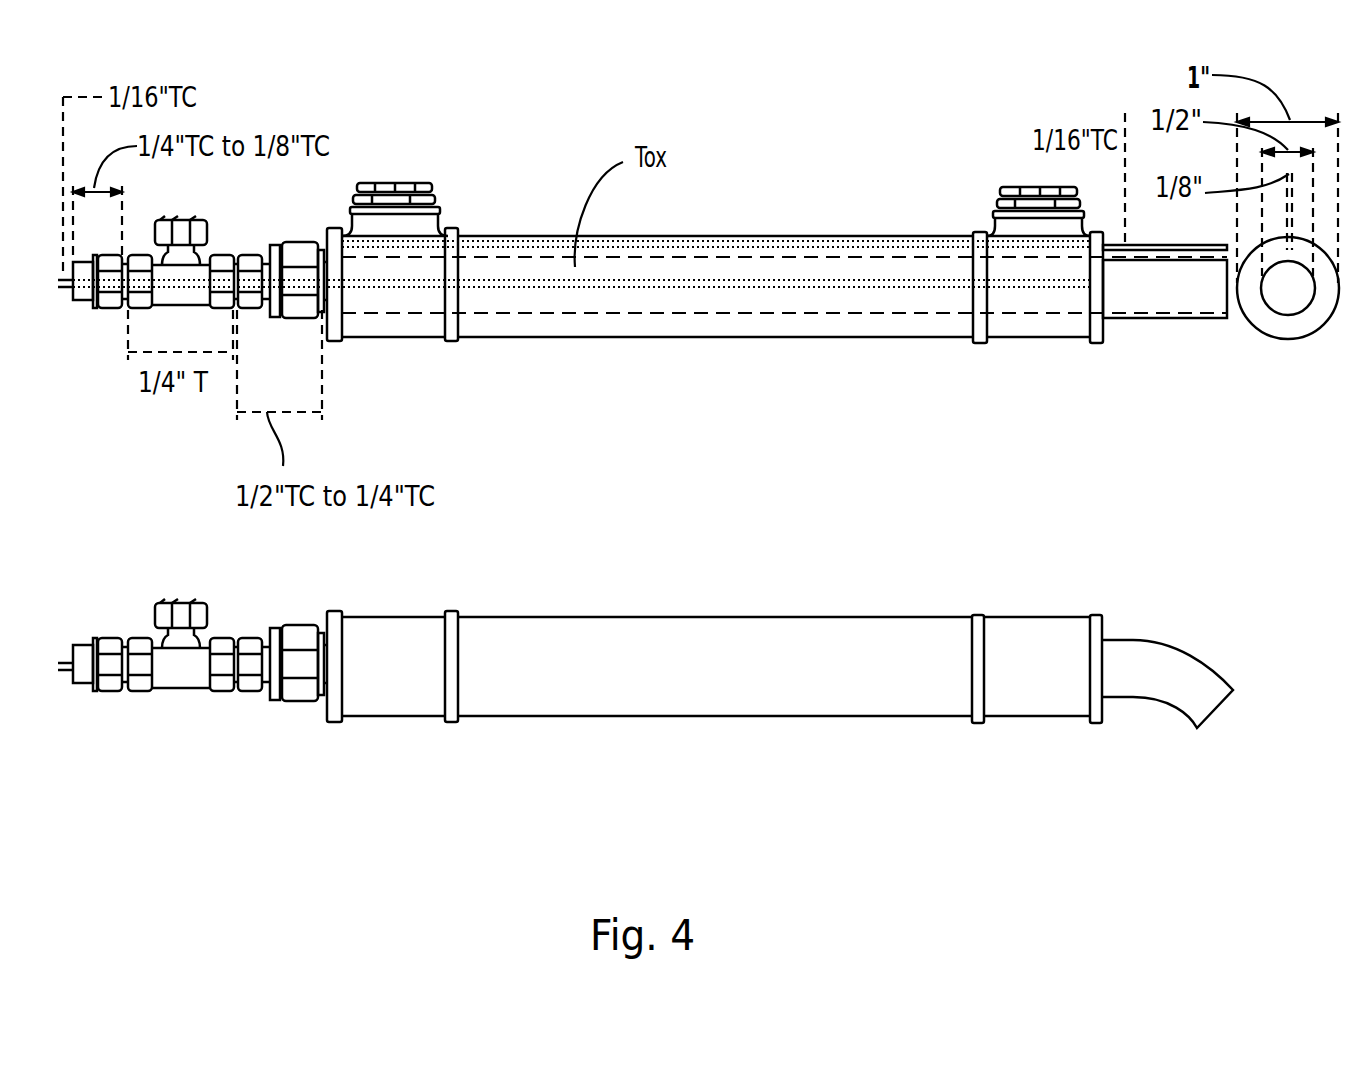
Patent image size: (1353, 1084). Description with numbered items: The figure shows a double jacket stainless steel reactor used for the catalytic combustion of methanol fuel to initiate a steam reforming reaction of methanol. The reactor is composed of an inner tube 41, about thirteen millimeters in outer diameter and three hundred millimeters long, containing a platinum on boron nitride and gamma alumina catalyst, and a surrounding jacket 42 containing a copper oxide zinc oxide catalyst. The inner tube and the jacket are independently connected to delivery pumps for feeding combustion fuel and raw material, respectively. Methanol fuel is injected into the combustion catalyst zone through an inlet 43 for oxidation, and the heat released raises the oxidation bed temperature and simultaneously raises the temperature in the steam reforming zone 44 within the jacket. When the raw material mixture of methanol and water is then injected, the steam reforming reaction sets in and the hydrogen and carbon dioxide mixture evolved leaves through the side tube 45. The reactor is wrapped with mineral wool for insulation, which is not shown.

The inner tube 41 is at (625, 258).
The jacket 42 is at (797, 237).
The inlet 43 is at (180, 217).
The steam reforming zone 44 is at (635, 322).
The side tube 45 is at (393, 180).